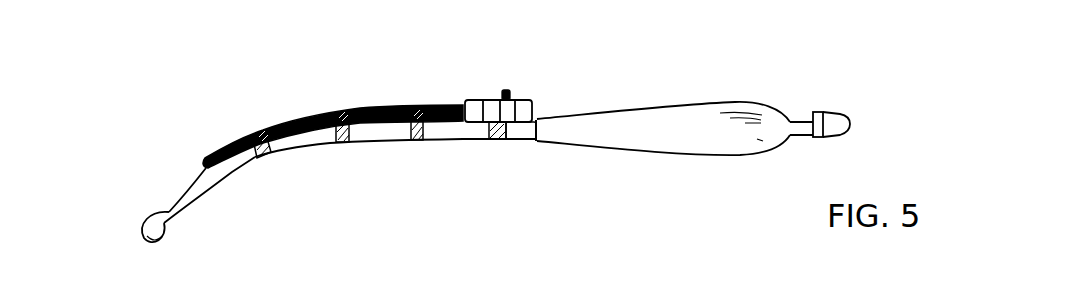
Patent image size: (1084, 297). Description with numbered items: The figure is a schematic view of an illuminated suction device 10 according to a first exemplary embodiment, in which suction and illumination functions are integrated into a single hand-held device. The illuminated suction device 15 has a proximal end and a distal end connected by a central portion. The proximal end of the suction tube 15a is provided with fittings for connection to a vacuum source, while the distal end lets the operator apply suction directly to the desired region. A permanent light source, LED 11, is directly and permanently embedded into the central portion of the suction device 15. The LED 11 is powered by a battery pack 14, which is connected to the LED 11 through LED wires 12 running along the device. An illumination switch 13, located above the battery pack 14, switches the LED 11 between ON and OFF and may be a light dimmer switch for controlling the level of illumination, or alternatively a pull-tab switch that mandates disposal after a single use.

The suction device 10 is at (101, 55).
The LED 11 is at (194, 154).
The LED wires 12 is at (370, 102).
The illumination switch 13 is at (505, 88).
The battery pack 14 is at (537, 108).
The suction device 15 is at (617, 168).
The suction tube 15a is at (370, 134).